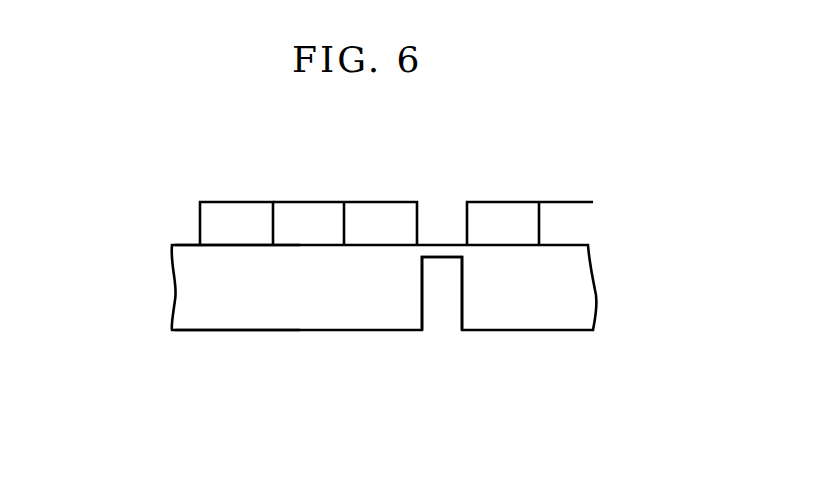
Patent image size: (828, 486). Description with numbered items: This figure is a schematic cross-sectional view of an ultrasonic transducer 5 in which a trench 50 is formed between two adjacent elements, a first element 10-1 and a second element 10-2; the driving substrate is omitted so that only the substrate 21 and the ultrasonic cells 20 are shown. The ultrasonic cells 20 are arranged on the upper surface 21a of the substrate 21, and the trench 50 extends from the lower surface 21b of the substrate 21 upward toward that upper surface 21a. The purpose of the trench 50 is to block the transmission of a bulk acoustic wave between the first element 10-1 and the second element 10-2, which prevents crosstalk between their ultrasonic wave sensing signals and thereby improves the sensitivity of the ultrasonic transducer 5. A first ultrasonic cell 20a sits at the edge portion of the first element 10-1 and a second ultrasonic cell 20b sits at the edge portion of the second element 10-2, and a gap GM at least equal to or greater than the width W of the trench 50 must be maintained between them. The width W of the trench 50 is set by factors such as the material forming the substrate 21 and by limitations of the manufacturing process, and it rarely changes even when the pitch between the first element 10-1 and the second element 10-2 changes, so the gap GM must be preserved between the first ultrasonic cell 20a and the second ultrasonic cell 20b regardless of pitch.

The ultrasonic transducer 5 is at (668, 185).
The first element 10-1 is at (417, 155).
The second element 10-2 is at (593, 155).
The ultrasonic cells 20 is at (268, 192).
The first ultrasonic cell 20a is at (381, 233).
The second ultrasonic cell 20b is at (498, 233).
The substrate 21 is at (588, 288).
The upper surface 21a is at (188, 246).
The lower surface 21b is at (188, 330).
The trench 50 is at (437, 296).
The gap GM is at (467, 175).
The width W is at (422, 336).